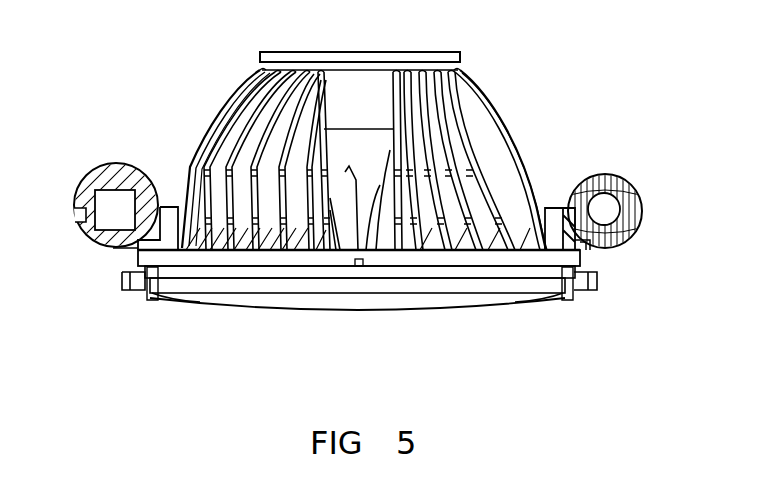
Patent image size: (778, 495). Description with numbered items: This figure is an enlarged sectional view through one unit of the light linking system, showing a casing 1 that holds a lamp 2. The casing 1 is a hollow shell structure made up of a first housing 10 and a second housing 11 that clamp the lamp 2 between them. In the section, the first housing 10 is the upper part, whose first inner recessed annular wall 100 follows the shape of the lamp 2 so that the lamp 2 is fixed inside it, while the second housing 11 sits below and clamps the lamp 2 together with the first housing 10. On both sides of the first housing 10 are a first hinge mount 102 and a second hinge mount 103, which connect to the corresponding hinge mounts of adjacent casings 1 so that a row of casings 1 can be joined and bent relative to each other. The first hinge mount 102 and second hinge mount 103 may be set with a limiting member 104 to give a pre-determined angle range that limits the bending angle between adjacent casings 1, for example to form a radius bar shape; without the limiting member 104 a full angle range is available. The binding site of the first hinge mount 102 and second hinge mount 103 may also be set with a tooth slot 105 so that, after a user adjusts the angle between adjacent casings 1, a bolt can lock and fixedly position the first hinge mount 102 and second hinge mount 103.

The casing 1 is at (573, 303).
The lamp 2 is at (248, 100).
The first housing 10 is at (557, 208).
The second housing 11 is at (143, 302).
The first inner recessed annular wall 100 is at (143, 168).
The first hinge mount 102 is at (612, 174).
The second hinge mount 103 is at (100, 168).
The limiting member 104 is at (125, 257).
The tooth slot 105 is at (645, 213).